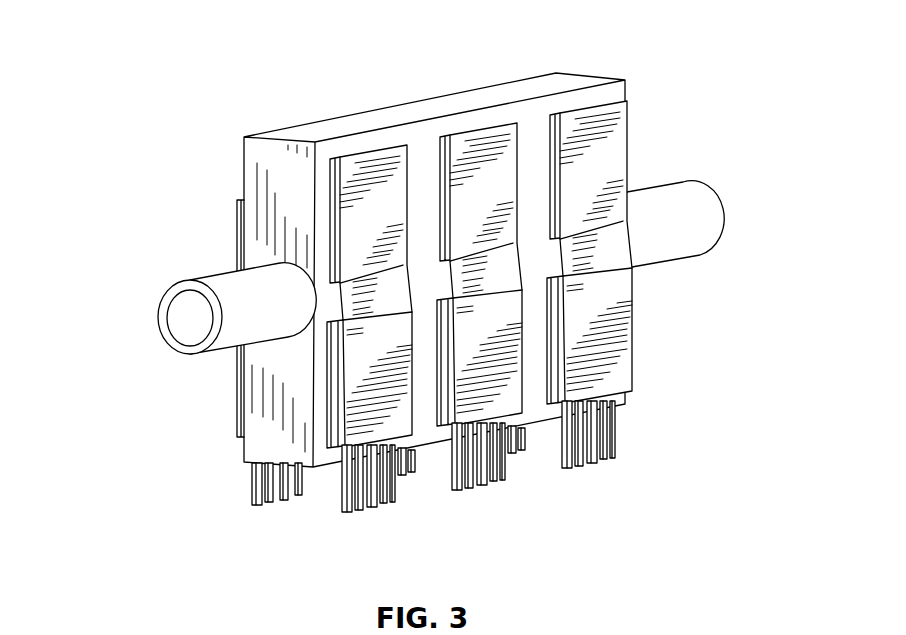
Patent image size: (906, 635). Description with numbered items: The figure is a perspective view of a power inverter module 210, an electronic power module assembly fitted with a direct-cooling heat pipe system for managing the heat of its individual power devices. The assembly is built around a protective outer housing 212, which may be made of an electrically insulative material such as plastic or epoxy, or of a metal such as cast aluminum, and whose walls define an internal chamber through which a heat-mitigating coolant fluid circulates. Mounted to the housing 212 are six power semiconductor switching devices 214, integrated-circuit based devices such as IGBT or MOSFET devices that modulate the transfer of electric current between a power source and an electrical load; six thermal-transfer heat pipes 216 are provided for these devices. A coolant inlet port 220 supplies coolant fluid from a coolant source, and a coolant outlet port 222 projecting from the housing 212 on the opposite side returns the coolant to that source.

The power inverter module 210 is at (165, 63).
The outer housing 212 is at (265, 128).
The power semiconductor switching devices 214 is at (252, 493).
The thermal-transfer heat pipes 216 is at (400, 187).
The coolant inlet port 220 is at (225, 282).
The coolant outlet port 222 is at (678, 247).